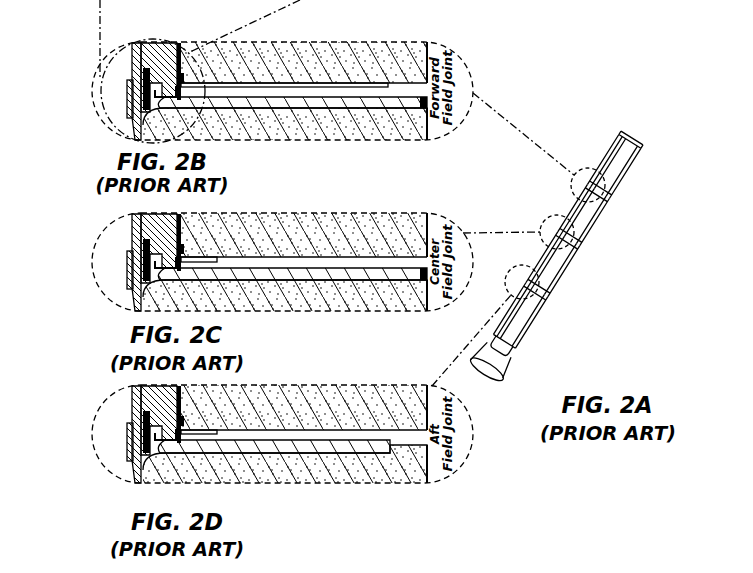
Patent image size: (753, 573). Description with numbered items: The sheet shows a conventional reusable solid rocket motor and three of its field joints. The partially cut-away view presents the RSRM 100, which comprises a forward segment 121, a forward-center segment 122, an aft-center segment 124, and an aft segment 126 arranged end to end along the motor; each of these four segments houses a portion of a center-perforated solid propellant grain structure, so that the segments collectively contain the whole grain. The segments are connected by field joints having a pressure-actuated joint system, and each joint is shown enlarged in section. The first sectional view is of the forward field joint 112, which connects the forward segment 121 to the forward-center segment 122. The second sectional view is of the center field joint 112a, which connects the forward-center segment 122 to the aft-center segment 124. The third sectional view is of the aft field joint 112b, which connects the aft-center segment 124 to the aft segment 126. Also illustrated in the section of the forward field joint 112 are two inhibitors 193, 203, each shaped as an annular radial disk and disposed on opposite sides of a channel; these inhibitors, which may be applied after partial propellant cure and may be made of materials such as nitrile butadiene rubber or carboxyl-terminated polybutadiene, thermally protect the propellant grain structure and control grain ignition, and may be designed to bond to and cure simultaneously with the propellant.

In FIG. 2A, the RSRM 100 is at (558, 256).
In FIG. 2B, the forward field joint 112 is at (104, 136).
In FIG. 2C, the center field joint 112a is at (122, 319).
In FIG. 2D, the aft field joint 112b is at (122, 495).
In FIG. 2B, the forward segment 121 is at (253, 65).
In FIG. 2B, the forward-center segment 122 is at (310, 135).
In FIG. 2C, the forward-center segment 122 is at (286, 233).
In FIG. 2C, the aft-center segment 124 is at (350, 312).
In FIG. 2D, the aft-center segment 124 is at (281, 402).
In FIG. 2D, the aft segment 126 is at (283, 485).
In FIG. 2B, the inhibitor 193 is at (198, 70).
In FIG. 2B, the inhibitor 203 is at (259, 108).